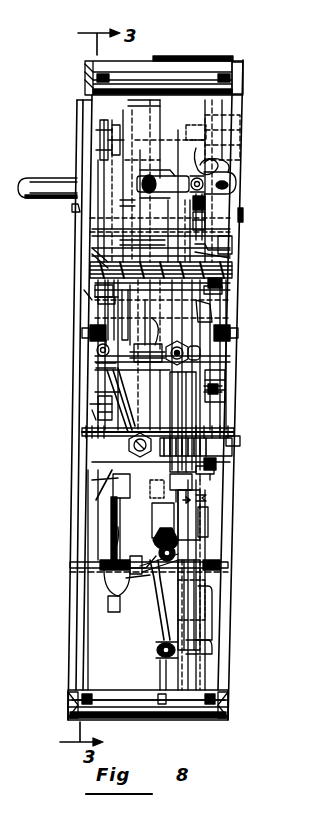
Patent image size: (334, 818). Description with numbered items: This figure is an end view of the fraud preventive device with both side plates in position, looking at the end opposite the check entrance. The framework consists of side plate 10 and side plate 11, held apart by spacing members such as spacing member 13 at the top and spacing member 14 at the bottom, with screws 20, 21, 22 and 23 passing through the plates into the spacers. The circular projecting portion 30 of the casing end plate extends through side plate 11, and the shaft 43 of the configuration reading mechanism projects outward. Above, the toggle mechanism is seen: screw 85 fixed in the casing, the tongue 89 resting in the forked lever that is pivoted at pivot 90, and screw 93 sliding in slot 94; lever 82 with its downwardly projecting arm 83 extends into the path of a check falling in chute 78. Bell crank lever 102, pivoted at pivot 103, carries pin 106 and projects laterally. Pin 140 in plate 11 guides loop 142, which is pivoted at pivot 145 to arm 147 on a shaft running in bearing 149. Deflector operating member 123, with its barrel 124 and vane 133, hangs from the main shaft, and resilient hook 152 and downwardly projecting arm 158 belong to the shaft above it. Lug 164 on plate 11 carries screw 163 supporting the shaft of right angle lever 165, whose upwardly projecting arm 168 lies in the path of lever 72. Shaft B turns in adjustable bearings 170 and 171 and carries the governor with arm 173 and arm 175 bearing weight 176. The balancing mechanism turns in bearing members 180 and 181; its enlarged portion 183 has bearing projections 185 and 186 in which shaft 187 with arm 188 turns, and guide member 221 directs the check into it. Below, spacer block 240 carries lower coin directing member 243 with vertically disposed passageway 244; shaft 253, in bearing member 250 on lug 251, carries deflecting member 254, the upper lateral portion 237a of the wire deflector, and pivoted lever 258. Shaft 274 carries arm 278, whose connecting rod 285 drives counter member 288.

The side plate 10 is at (205, 306).
The side plate 11 is at (86, 297).
The spacing member 13 is at (127, 72).
The spacing member 14 is at (160, 700).
The screw 20 is at (68, 707).
The screw 21 is at (232, 703).
The screw 22 is at (240, 78).
The screw 23 is at (85, 78).
The circular projecting portion 30 is at (74, 208).
The shaft 43 is at (33, 176).
The lever 72 is at (124, 305).
The chute 78 is at (222, 290).
The lever 82 is at (236, 213).
The downwardly projecting arm 83 is at (205, 250).
The pin or screw 85 is at (206, 205).
The tongue 89 is at (196, 148).
The pivot 90 is at (214, 172).
The screw 93 is at (195, 177).
The slot 94 is at (146, 174).
The bell crank lever 102 is at (161, 264).
The pivot 103 is at (97, 293).
The pin 106 is at (240, 277).
The deflector operating member 123 is at (212, 322).
The barrel 124 is at (226, 377).
The plate or vane 133 is at (151, 532).
The pin 140 is at (98, 135).
The loop 142 is at (104, 152).
The pivot 145 is at (97, 352).
The arm 147 is at (155, 350).
The bearing 149 is at (200, 353).
The resilient hook 152 is at (40, 352).
The downwardly projecting arm 158 is at (100, 401).
The screw 163 is at (128, 459).
The lug 164 is at (112, 483).
The right angle lever 165 is at (96, 413).
The upwardly projecting arm 168 is at (124, 400).
The adjustable bearing 170 is at (84, 333).
The adjustable bearing 171 is at (238, 331).
The arm 173 is at (110, 268).
The arm 175 is at (100, 392).
The weight 176 is at (120, 470).
The bearing member 180 is at (240, 442).
The bearing member 181 is at (78, 432).
The enlarged portion 183 is at (210, 477).
The bearing projection 185 is at (220, 389).
The bearing projection 186 is at (216, 463).
The shaft 187 is at (216, 402).
The arm 188 is at (210, 421).
The guide member 221 is at (174, 481).
The upper lateral portion of deflecting member 237a is at (210, 598).
The spacer block 240 is at (212, 647).
The lower coin directing member 243 is at (200, 498).
The vertically disposed passageway 244 is at (188, 640).
The bearing member 250 is at (178, 544).
The lug 251 is at (156, 547).
The shaft 253 is at (158, 655).
The deflecting member 254 is at (152, 598).
The pivoted lever 258 is at (124, 600).
The shaft 274 is at (92, 565).
The arm 278 is at (100, 603).
The connecting rod 285 is at (118, 540).
The counter member 288 is at (187, 57).
The shaft B is at (153, 322).